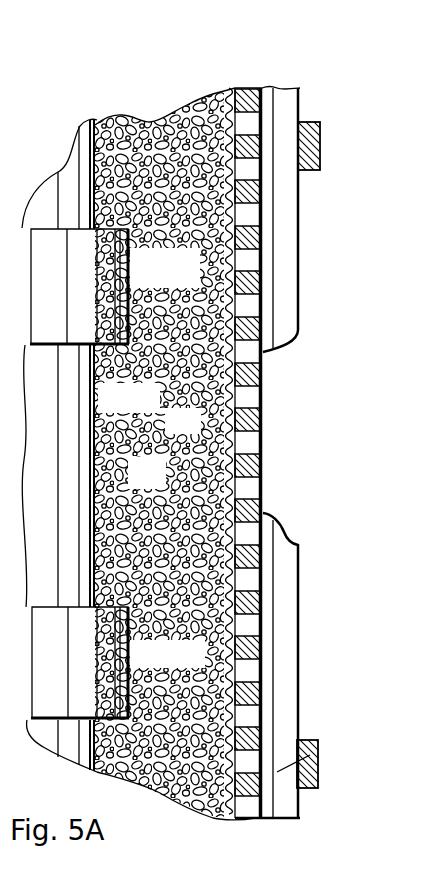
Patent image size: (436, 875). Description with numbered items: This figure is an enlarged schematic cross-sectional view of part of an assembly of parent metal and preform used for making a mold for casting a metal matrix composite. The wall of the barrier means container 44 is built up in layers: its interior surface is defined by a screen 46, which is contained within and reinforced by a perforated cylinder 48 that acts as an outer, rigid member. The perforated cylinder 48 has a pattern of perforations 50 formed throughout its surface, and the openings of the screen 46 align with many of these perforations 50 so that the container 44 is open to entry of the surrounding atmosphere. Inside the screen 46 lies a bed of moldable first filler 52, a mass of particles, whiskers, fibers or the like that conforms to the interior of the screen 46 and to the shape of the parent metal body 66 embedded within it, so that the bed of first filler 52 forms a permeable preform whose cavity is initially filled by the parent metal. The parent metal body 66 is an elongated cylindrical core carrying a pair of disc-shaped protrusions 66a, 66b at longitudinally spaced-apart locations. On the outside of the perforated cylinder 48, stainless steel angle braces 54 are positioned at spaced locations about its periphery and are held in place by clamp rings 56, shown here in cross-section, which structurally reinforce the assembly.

The barrier means container 44 is at (246, 82).
The screen 46 is at (162, 454).
The perforated cylinder 48 is at (263, 462).
The perforations 50 is at (250, 355).
The first filler 52 is at (161, 486).
The angle braces 54 is at (282, 291).
The clamp rings 56 is at (302, 170).
The parent metal body 66 is at (70, 425).
The disc-shaped protrusion 66a is at (108, 293).
The disc-shaped protrusion 66b is at (110, 672).